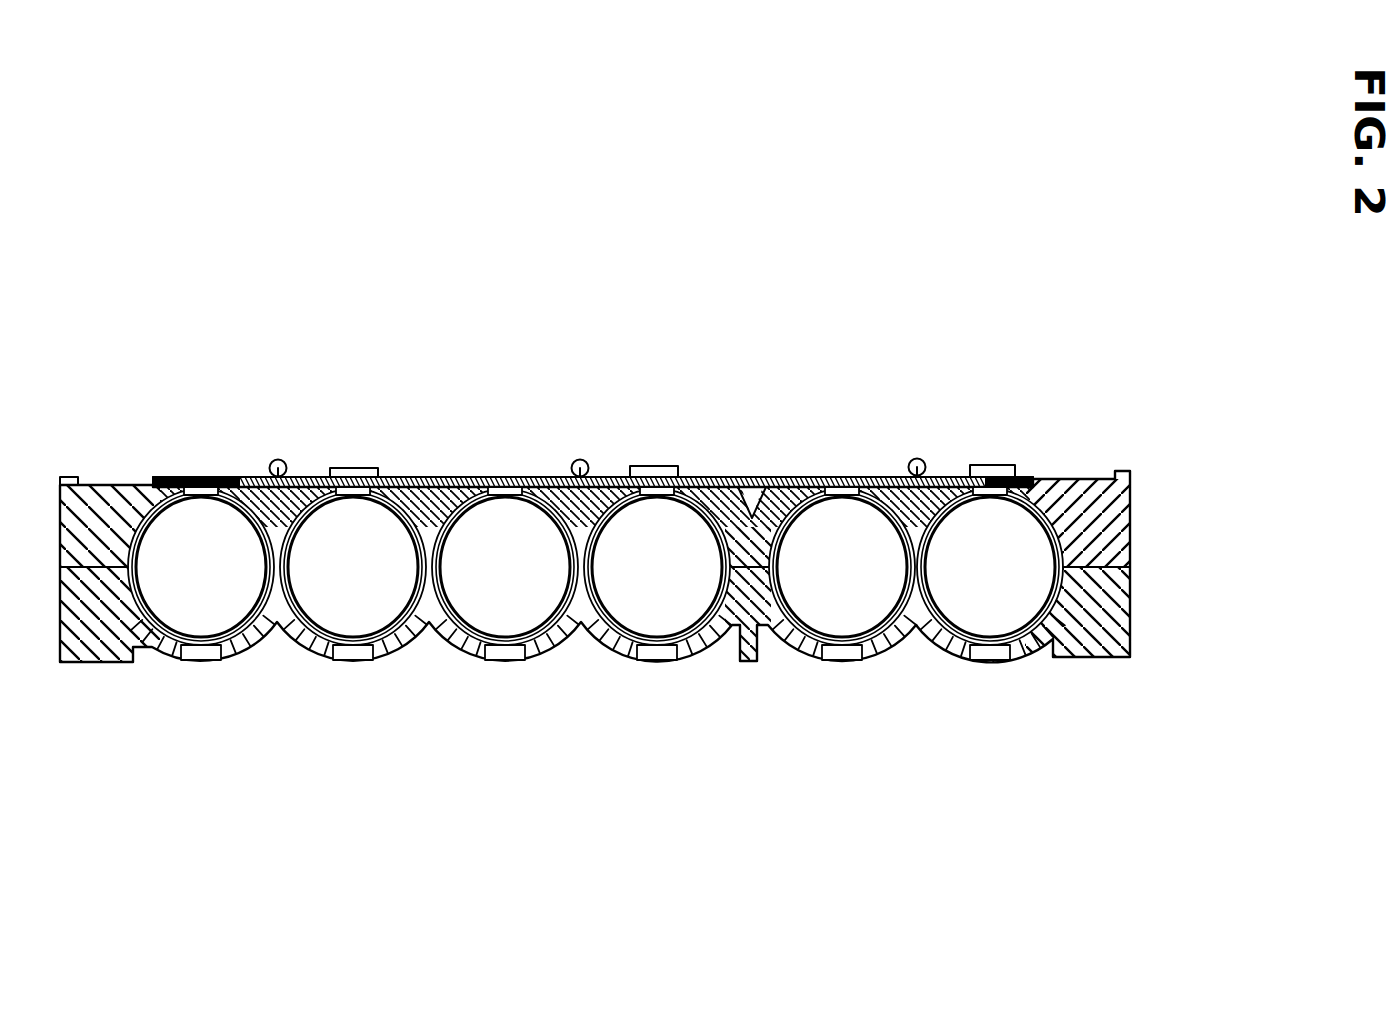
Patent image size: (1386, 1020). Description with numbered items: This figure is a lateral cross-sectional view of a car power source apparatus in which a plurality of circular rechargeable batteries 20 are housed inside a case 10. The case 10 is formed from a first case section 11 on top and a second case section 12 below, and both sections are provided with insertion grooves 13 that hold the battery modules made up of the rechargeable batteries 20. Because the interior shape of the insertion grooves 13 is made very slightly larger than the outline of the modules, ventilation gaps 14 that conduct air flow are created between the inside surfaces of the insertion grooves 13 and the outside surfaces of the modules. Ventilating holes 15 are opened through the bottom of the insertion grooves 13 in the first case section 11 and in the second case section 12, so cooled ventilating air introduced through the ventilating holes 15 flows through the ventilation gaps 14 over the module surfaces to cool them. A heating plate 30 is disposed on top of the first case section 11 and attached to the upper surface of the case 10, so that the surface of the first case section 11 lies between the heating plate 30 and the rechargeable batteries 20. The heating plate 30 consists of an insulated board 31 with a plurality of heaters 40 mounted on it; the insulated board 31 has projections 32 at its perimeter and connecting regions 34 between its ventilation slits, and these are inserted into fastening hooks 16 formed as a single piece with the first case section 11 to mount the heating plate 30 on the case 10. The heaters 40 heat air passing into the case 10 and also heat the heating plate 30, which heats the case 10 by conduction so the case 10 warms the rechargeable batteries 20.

The case 10 is at (1205, 626).
The first case section 11 is at (1115, 528).
The second case section 12 is at (1115, 614).
The insertion grooves 13 is at (130, 528).
The ventilation gaps 14 is at (893, 647).
The ventilating holes 15 is at (392, 477).
The fastening hooks 16 is at (350, 468).
The rechargeable batteries 20 is at (205, 625).
The heating plate 30 is at (906, 409).
The insulated board 31 is at (778, 477).
The projections 32 is at (160, 477).
The connecting regions 34 is at (508, 477).
The heaters 40 is at (278, 459).